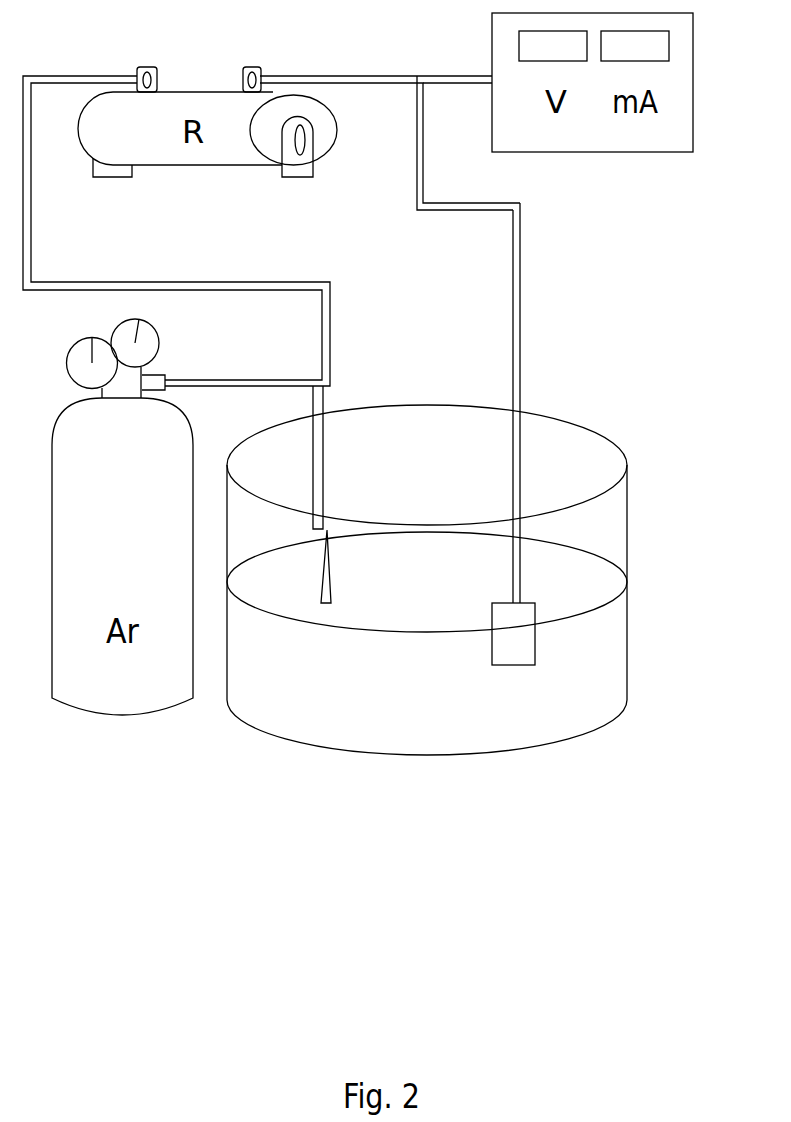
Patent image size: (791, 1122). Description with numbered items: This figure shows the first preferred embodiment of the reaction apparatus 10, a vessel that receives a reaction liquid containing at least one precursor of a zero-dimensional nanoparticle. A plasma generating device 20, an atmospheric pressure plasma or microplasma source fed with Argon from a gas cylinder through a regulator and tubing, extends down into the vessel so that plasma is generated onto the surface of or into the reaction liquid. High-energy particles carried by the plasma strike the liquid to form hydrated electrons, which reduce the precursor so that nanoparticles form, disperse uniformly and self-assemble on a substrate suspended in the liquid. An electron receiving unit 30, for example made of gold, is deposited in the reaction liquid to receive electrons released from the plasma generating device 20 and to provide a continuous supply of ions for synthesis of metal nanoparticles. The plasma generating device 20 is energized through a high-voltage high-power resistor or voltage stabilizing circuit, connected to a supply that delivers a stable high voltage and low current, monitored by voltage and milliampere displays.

The reaction apparatus 10 is at (652, 597).
The plasma generating device 20 is at (322, 603).
The electron receiving unit 30 is at (522, 660).